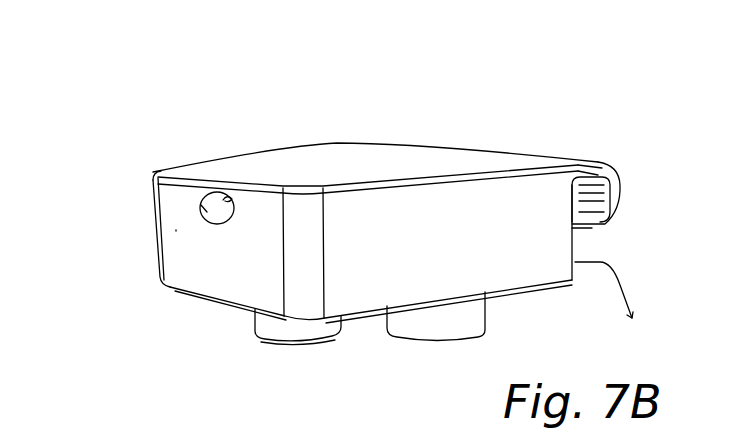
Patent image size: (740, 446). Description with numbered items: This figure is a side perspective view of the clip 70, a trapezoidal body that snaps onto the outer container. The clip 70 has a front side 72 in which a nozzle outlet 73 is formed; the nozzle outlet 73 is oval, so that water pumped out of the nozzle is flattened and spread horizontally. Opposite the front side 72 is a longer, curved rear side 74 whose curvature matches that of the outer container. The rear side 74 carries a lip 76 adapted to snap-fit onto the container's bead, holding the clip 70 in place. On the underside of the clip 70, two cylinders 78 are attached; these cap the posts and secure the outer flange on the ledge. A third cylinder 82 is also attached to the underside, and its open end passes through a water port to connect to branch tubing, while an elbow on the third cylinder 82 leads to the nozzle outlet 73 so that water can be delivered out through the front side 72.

The clip 70 is at (358, 145).
The front side 72 is at (202, 268).
The nozzle outlet 73 is at (200, 212).
The rear side 74 is at (630, 305).
The lip 76 is at (603, 226).
The cylinders 78 is at (447, 344).
The third cylinder 82 is at (290, 345).